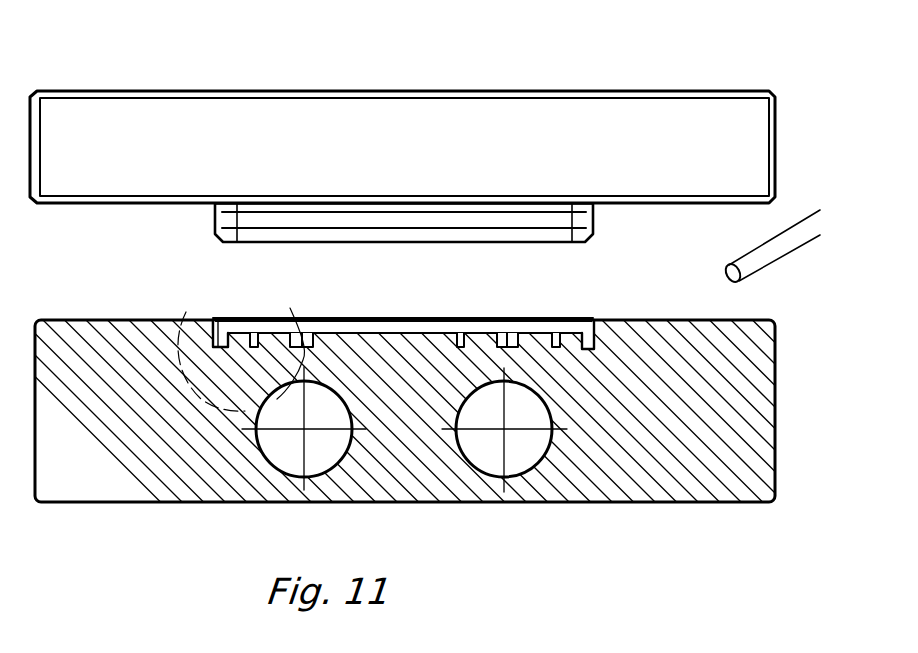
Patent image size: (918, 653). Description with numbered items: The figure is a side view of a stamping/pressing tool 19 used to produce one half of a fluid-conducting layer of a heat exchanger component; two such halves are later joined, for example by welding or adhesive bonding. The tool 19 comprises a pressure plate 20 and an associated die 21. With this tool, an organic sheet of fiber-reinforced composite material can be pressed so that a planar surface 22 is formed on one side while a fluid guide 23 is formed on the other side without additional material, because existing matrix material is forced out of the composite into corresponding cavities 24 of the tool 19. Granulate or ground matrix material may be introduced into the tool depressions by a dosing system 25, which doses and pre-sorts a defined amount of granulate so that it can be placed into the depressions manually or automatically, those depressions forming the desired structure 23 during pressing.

The stamping/pressing tool 19 is at (745, 69).
The pressure plate 20 is at (402, 147).
The die 21 is at (652, 470).
The planar surface 22 is at (534, 248).
The fluid guide 23 is at (447, 321).
The cavities 24 is at (225, 333).
The dosing system 25 is at (818, 208).